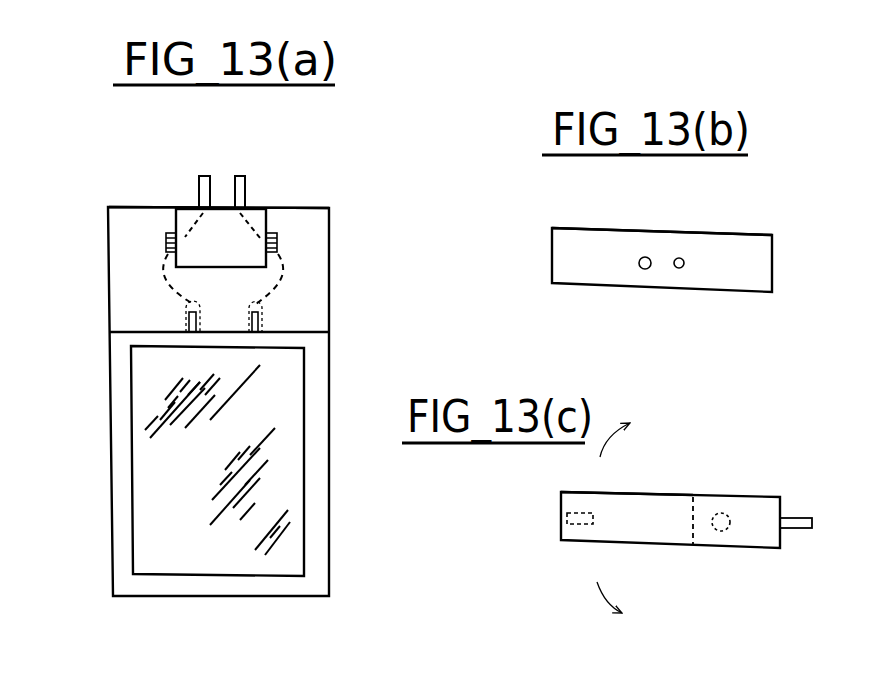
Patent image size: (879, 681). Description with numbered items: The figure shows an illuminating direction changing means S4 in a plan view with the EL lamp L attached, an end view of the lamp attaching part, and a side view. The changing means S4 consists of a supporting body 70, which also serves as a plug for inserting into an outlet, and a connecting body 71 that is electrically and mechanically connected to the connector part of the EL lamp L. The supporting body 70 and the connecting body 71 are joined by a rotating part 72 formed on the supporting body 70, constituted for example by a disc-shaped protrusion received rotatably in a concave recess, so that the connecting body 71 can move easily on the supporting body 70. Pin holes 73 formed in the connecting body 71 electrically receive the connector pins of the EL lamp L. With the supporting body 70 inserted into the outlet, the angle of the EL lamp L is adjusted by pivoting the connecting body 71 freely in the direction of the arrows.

In FIG. 13A, the changing means S4 is at (333, 237).
In FIG. 13B, the changing means S4 is at (727, 231).
In FIG. 13C, the changing means S4 is at (708, 555).
In FIG. 13A, the supporting body 70 is at (243, 228).
In FIG. 13C, the supporting body 70 is at (762, 507).
In FIG. 13A, the connecting body 71 is at (310, 298).
In FIG. 13B, the connecting body 71 is at (745, 278).
In FIG. 13C, the connecting body 71 is at (638, 502).
In FIG. 13A, the rotating part 72 is at (166, 240).
In FIG. 13C, the rotating part 72 is at (725, 528).
In FIG. 13A, the pin holes 73 is at (262, 318).
In FIG. 13B, the pin holes 73 is at (643, 268).
In FIG. 13C, the pin holes 73 is at (560, 518).
In FIG. 13A, the EL lamp L is at (328, 502).